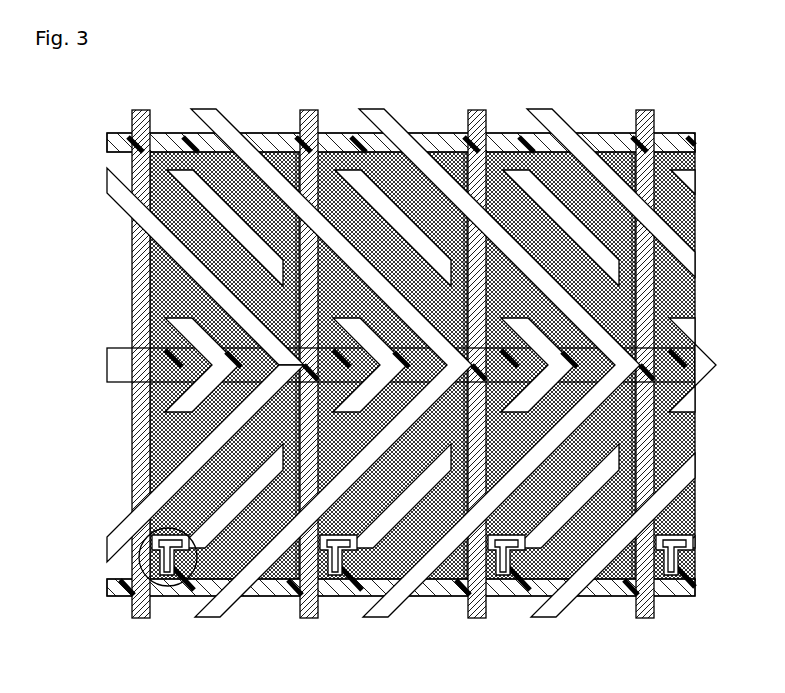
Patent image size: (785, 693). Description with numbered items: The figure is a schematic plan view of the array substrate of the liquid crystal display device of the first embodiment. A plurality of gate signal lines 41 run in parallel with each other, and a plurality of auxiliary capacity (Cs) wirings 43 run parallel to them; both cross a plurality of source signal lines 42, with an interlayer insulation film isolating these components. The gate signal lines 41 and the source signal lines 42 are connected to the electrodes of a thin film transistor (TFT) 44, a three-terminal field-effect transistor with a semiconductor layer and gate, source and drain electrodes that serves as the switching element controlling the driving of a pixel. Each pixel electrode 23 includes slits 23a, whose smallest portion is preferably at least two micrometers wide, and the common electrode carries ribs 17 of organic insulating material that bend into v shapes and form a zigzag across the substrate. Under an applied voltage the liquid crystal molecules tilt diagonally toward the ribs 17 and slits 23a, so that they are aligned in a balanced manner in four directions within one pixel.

The ribs 17 is at (175, 247).
The pixel electrode 23 is at (208, 152).
The slits 23a is at (190, 183).
The gate signal lines 41 is at (107, 148).
The source signal lines 42 is at (142, 116).
The auxiliary capacity (Cs) wirings 43 is at (110, 366).
The thin film transistor 44 is at (178, 587).